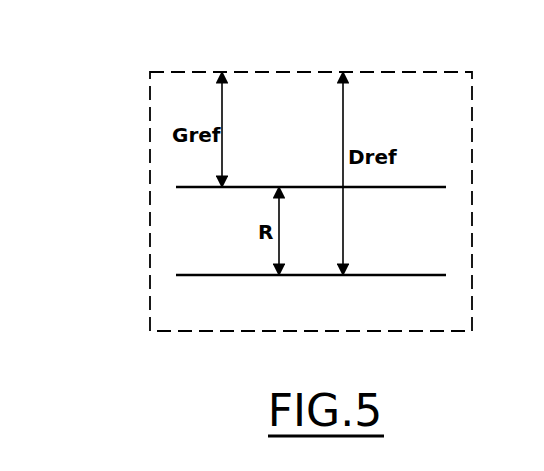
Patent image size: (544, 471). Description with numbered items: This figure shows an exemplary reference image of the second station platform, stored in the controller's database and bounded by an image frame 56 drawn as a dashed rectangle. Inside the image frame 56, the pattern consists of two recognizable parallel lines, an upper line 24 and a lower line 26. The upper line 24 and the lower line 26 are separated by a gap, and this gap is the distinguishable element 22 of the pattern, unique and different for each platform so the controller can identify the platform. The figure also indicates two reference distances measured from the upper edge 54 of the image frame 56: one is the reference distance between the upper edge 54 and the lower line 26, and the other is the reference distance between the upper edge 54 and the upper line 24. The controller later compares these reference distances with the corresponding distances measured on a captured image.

The distinguishable element 22 is at (186, 240).
The upper line 24 is at (430, 187).
The lower line 26 is at (412, 276).
The upper edge 54 is at (303, 71).
The image frame 56 is at (147, 338).